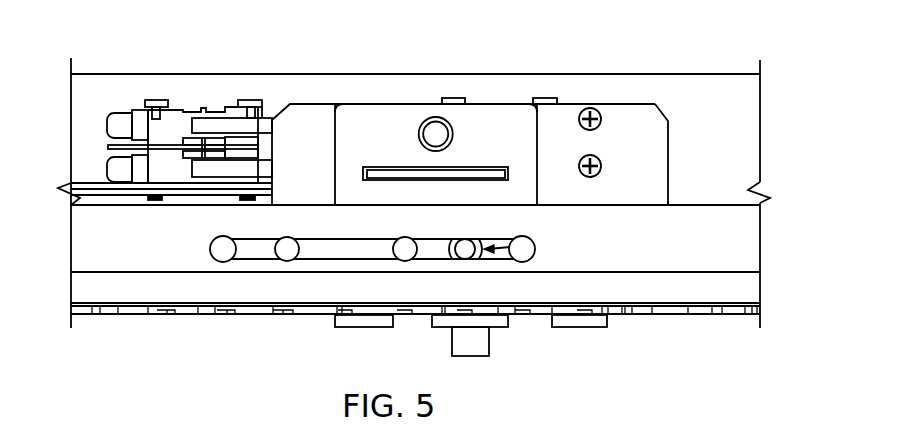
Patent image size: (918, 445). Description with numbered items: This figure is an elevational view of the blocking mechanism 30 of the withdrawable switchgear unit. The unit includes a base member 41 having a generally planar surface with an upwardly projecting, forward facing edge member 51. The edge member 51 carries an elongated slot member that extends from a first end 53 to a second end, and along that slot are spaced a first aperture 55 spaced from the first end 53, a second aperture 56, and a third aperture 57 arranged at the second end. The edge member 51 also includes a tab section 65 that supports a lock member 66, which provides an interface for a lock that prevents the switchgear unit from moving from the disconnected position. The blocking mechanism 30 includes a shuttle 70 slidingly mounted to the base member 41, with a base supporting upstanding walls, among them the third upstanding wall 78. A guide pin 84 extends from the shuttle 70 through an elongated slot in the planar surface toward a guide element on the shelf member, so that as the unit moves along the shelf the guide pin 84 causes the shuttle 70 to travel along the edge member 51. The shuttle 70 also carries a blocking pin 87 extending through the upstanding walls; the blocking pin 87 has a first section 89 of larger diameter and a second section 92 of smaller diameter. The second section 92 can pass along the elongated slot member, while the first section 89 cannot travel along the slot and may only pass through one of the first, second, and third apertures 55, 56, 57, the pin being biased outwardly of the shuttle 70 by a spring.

The blocking mechanism 30 is at (692, 157).
The base member 41 is at (91, 323).
The edge member 51 is at (112, 243).
The first end 53 is at (226, 252).
The first aperture 55 is at (289, 258).
The second aperture 56 is at (406, 257).
The third aperture 57 is at (522, 260).
The tab section 65 is at (368, 132).
The lock member 66 is at (477, 172).
The shuttle 70 is at (657, 103).
The third upstanding wall 78 is at (565, 165).
The guide pin 84 is at (494, 360).
The blocking pin 87 is at (509, 247).
The first section 89 is at (448, 247).
The second section 92 is at (467, 243).